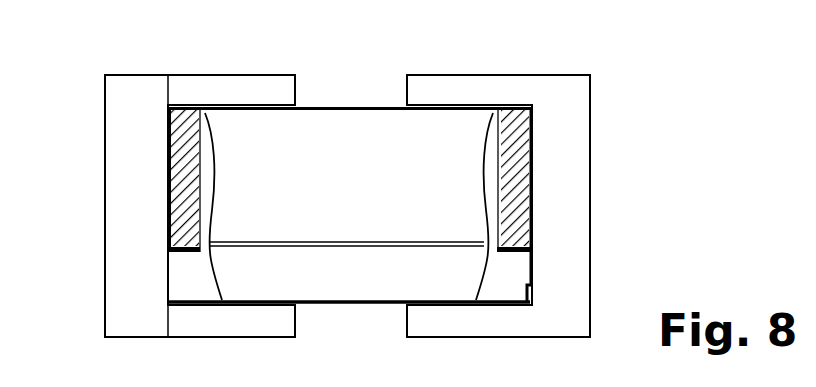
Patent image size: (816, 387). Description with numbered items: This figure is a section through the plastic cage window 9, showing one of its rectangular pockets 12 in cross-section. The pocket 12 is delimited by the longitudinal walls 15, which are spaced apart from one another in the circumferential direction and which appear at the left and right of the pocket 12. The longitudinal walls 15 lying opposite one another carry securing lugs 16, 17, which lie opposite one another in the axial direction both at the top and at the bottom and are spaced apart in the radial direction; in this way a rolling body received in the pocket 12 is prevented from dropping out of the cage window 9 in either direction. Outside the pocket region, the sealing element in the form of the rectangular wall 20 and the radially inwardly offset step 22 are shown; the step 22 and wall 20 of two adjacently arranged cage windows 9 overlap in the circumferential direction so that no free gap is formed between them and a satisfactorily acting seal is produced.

The plastic window 9 is at (660, 142).
The pocket 12 is at (370, 196).
The longitudinal wall 15 is at (168, 195).
The securing lug 16 is at (200, 283).
The securing lug 17 is at (206, 127).
The rectangular wall 20 is at (563, 93).
The radially inwardly offset step 22 is at (137, 91).